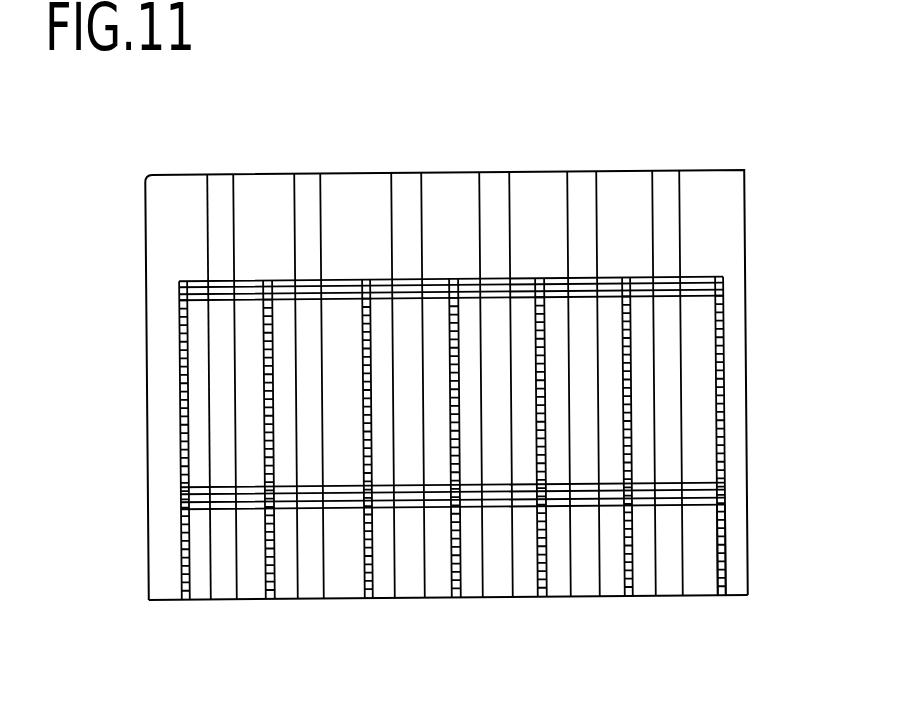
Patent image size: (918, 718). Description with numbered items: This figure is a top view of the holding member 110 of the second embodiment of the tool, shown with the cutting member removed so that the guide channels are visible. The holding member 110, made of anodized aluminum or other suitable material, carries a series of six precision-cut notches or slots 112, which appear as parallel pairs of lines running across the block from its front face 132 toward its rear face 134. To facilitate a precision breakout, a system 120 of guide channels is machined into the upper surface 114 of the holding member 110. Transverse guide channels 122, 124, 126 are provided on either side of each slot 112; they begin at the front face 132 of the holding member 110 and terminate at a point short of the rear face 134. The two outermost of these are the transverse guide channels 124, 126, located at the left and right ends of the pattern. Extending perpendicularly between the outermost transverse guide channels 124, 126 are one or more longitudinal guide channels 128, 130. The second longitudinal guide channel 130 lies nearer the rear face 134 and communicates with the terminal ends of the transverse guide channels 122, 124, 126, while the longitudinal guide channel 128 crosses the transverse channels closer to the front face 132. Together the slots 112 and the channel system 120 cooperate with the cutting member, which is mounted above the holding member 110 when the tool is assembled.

The holding member 110 is at (90, 234).
The slots 112 is at (408, 198).
The upper surface 114 is at (172, 200).
The system of guide channels 120 is at (726, 380).
The transverse guide channels 122 is at (628, 600).
The outermost transverse guide channel 124 is at (186, 600).
The outermost transverse guide channel 126 is at (721, 598).
The longitudinal guide channel 128 is at (725, 503).
The second longitudinal guide channel 130 is at (724, 290).
The front face 132 is at (163, 601).
The rear face 134 is at (620, 172).